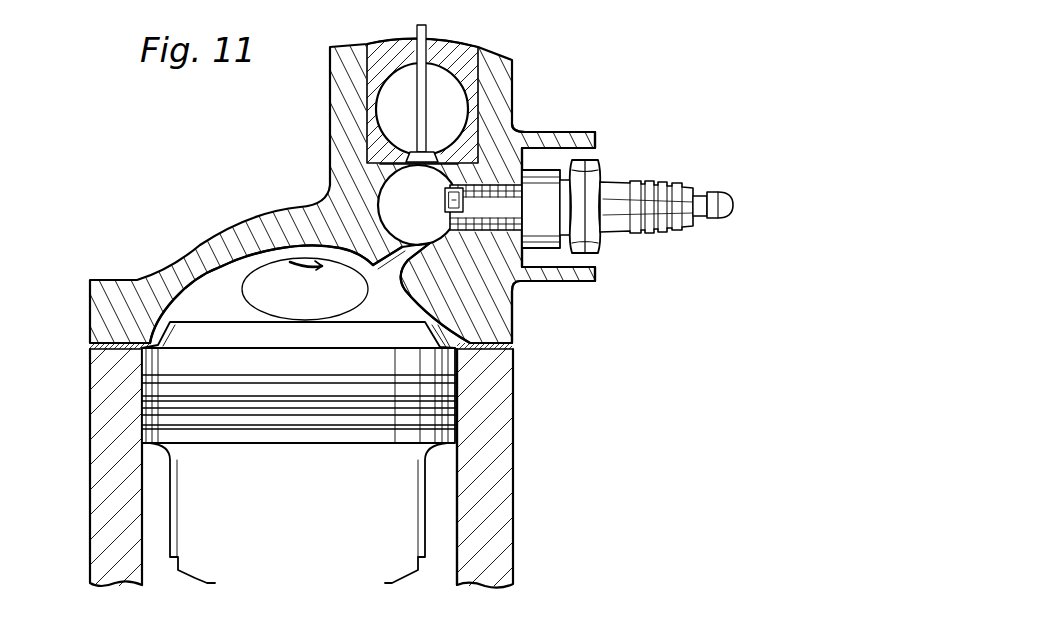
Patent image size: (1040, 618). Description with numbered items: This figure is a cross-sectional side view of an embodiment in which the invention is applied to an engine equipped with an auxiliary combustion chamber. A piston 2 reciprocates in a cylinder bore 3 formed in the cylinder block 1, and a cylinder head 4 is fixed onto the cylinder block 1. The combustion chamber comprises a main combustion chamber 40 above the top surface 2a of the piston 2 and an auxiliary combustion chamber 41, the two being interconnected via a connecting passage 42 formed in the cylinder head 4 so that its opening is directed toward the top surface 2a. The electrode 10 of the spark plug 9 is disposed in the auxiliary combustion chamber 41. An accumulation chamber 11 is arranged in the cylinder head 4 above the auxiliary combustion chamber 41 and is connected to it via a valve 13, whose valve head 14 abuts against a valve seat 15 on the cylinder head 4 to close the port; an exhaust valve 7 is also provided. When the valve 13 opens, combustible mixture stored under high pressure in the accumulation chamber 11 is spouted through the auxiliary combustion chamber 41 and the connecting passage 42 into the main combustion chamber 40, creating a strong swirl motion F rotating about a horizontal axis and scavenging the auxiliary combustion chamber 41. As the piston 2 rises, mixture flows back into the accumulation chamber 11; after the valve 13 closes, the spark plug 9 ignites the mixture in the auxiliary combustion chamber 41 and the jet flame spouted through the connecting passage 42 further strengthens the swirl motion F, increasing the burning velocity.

The cylinder block 1 is at (481, 560).
The piston 2 is at (388, 563).
The top surface of the piston 2a is at (258, 320).
The cylinder bore 3 is at (450, 522).
The cylinder head 4 is at (237, 230).
The exhaust valve 7 is at (230, 290).
The spark plug 9 is at (617, 196).
The electrode of the spark plug 10 is at (510, 297).
The accumulation chamber 11 is at (445, 102).
The valve 13 is at (426, 85).
The valve head 14 is at (383, 186).
The valve seat 15 is at (468, 152).
The main combustion chamber 40 is at (401, 311).
The auxiliary combustion chamber 41 is at (429, 220).
The connecting passage 42 is at (410, 262).
The swirl motion F is at (272, 265).